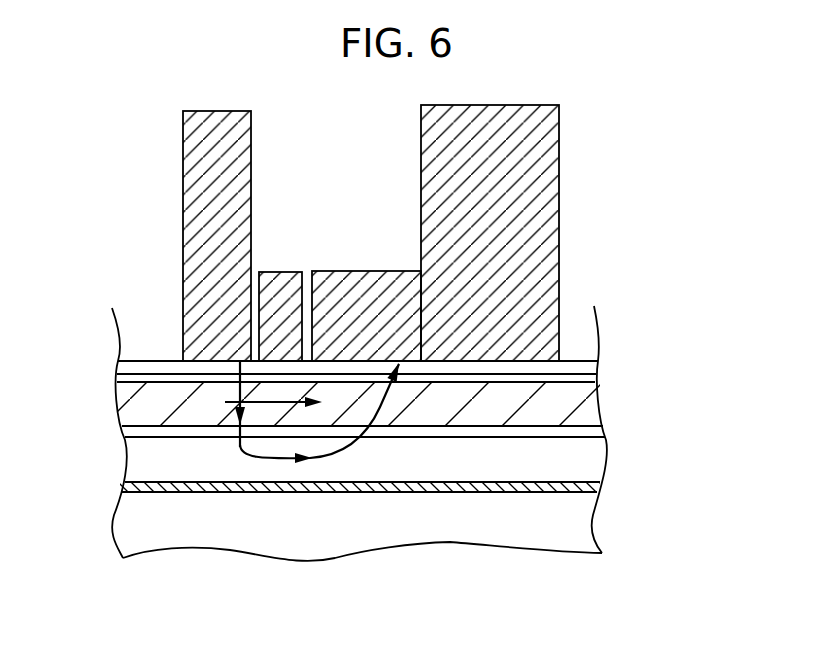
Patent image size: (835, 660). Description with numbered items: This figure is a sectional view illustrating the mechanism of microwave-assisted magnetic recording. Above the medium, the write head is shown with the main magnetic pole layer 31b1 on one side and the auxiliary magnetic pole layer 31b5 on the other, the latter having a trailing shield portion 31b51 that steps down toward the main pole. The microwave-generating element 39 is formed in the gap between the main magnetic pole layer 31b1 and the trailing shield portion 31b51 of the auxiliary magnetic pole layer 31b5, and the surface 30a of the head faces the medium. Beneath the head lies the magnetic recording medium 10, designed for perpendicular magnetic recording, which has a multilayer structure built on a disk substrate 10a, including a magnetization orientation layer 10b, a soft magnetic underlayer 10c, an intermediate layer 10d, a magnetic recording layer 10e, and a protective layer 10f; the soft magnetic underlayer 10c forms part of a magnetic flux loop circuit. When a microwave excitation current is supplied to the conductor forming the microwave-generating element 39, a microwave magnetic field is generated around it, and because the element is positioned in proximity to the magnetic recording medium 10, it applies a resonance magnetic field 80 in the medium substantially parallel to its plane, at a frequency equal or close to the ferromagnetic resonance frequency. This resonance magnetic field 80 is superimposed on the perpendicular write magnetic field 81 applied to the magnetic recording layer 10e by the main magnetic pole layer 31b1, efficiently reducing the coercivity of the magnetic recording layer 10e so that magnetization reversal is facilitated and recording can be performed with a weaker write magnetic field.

The main magnetic pole layer 31b1 is at (200, 273).
The microwave-generating element 39 is at (288, 287).
The auxiliary magnetic pole layer 31b5 is at (543, 180).
The trailing shield portion 31b51 is at (400, 321).
The magnetic recording medium 10 is at (730, 362).
The protective layer 10f is at (600, 375).
The magnetic recording layer 10e is at (585, 407).
The intermediate layer 10d is at (595, 432).
The soft magnetic underlayer 10c is at (592, 455).
The magnetization orientation layer 10b is at (596, 484).
The disk substrate 10a is at (583, 525).
The bottom surface of flow path member 30a is at (477, 361).
The resonance magnetic field 80 is at (252, 398).
The perpendicular write magnetic field 81 is at (240, 449).